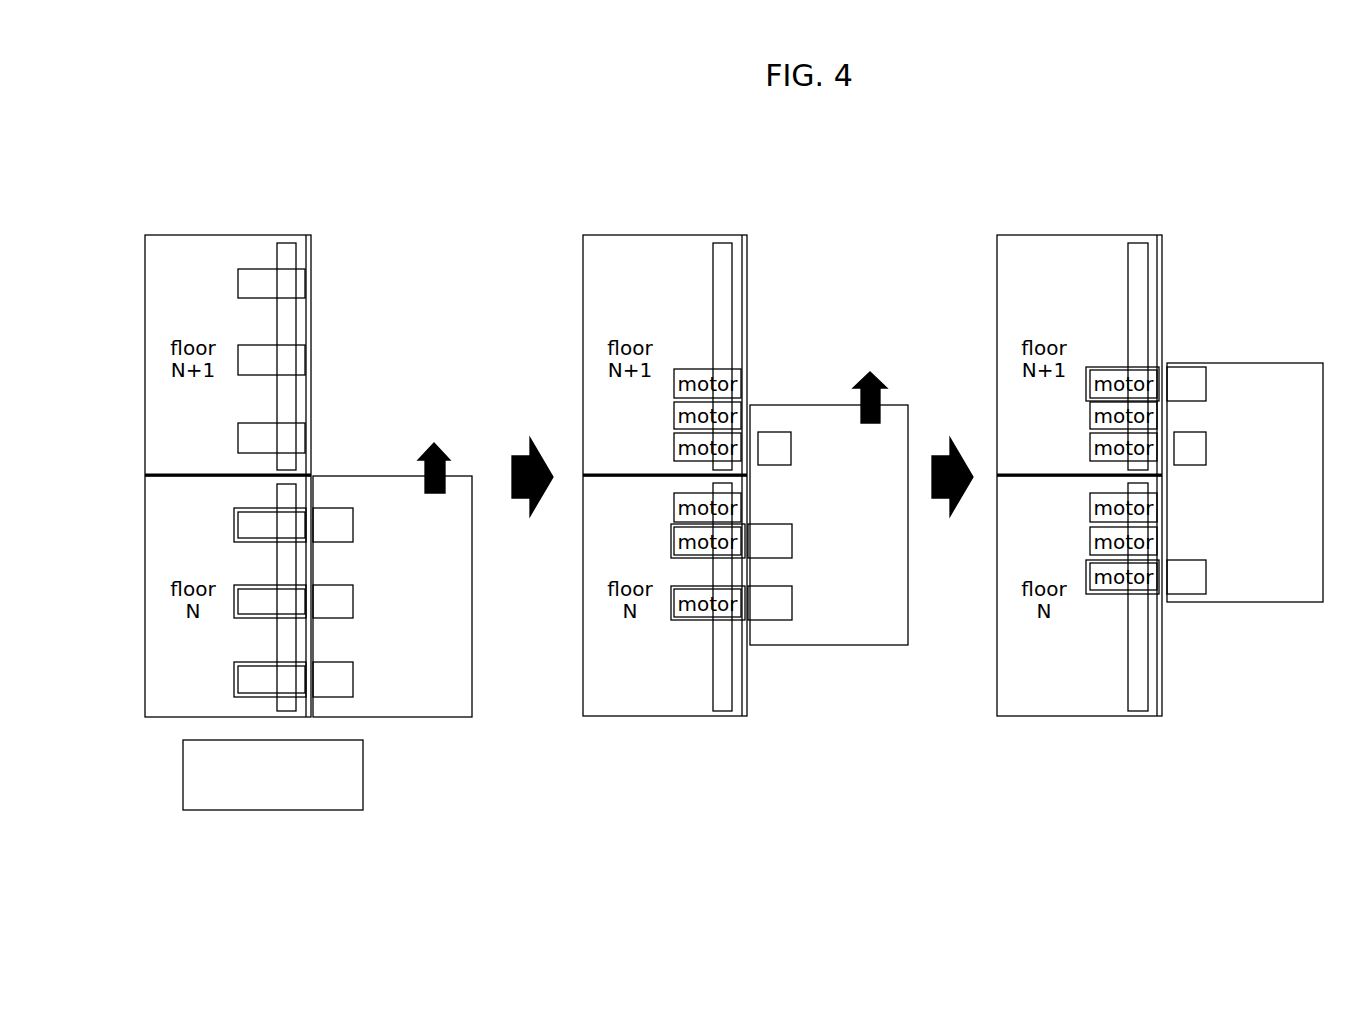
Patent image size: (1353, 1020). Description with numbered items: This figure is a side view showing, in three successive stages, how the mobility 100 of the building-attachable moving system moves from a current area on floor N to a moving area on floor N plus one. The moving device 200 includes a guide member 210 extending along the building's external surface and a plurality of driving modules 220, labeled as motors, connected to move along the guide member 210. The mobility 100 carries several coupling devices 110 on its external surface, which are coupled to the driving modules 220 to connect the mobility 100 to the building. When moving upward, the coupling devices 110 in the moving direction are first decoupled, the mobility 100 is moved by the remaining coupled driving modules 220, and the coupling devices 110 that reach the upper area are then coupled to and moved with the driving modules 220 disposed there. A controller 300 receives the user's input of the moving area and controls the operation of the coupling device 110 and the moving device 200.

The mobility 100 is at (453, 732).
The coupling device 110 is at (332, 525).
The moving device 200 is at (301, 397).
The guide member 210 is at (297, 258).
The driving module 220 is at (307, 285).
The controller 300 is at (273, 775).